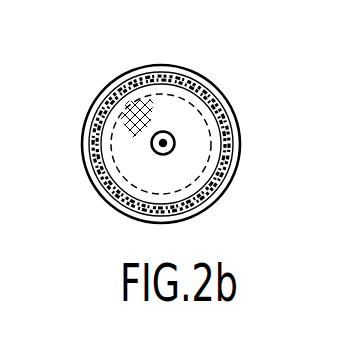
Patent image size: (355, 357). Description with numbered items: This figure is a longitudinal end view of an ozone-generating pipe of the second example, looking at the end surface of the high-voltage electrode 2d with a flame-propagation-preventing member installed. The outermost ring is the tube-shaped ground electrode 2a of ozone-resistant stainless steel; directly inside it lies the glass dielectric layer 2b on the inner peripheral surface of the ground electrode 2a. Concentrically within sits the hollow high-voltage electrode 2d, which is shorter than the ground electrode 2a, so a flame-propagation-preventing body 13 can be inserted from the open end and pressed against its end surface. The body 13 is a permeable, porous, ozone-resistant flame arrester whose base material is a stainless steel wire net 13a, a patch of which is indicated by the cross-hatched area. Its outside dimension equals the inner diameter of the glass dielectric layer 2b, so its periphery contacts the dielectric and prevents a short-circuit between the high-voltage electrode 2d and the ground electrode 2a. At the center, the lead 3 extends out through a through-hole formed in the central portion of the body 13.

The ground electrode 2a is at (185, 66).
The glass dielectric layer 2b is at (231, 164).
The high-voltage electrode 2d is at (166, 85).
The flame-propagation-preventing body 13 is at (228, 96).
The stainless steel wire net 13a is at (130, 106).
The lead 3 is at (163, 143).